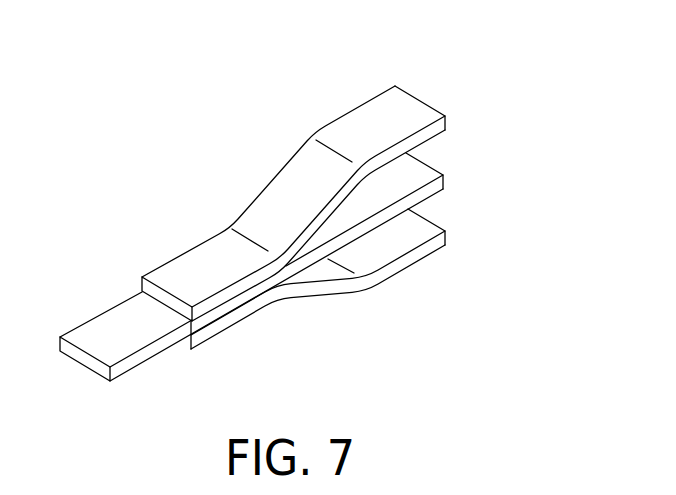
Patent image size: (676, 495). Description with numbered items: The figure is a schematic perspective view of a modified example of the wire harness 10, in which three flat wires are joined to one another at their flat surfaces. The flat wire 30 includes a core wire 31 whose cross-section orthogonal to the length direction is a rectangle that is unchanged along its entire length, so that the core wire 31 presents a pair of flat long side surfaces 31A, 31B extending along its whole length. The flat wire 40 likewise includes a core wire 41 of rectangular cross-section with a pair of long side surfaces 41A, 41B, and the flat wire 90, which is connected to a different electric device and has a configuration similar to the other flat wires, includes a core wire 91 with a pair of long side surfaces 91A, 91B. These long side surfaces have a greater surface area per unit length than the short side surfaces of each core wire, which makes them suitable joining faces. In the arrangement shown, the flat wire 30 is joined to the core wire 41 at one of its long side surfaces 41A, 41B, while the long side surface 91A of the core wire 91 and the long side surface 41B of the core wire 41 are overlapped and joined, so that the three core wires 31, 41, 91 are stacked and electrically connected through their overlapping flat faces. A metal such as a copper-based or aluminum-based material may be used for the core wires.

The wire harness 10 is at (140, 160).
The flat wire 30 is at (437, 106).
The core wire 31 is at (293, 203).
The long side surface 31A is at (234, 299).
The long side surface 31B is at (195, 261).
The flat wire 40 is at (438, 163).
The core wire 41 is at (251, 263).
The long side surface 41A is at (112, 322).
The long side surface 41B is at (157, 360).
The flat wire 90 is at (438, 220).
The core wire 91 is at (318, 275).
The long side surface 91A is at (405, 243).
The long side surface 91B is at (393, 278).